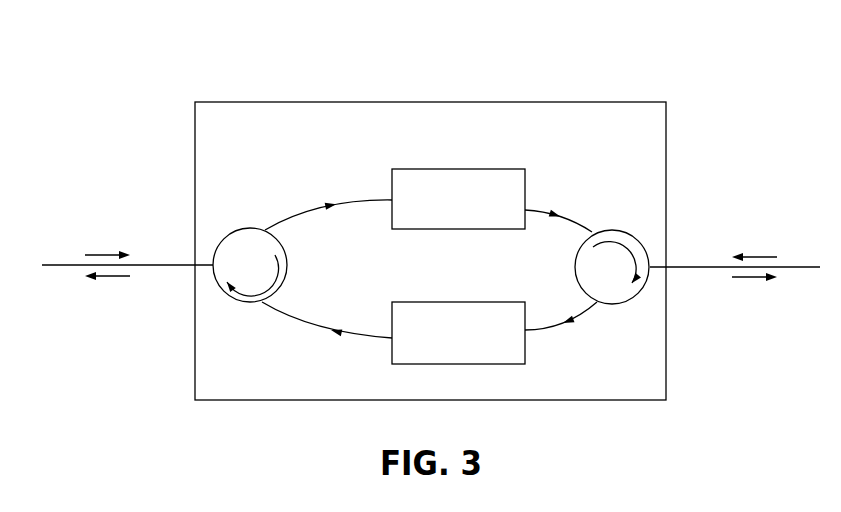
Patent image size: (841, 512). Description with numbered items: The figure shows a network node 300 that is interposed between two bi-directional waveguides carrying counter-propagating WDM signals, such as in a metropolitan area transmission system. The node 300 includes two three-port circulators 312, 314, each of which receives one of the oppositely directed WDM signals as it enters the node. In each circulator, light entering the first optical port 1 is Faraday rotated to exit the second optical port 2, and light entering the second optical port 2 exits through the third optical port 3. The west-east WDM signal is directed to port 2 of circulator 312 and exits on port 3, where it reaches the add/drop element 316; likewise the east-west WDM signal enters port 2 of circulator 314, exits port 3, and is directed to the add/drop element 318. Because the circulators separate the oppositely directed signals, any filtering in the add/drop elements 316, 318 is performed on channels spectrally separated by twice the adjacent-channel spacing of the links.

The node 300 is at (284, 73).
The three-port circulator 312 is at (250, 228).
The three-port circulator 314 is at (610, 230).
The add/drop element 316 is at (455, 169).
The add/drop element 318 is at (455, 302).
The first optical port 1 is at (258, 303).
The second optical port 2 is at (212, 267).
The third optical port 3 is at (265, 230).